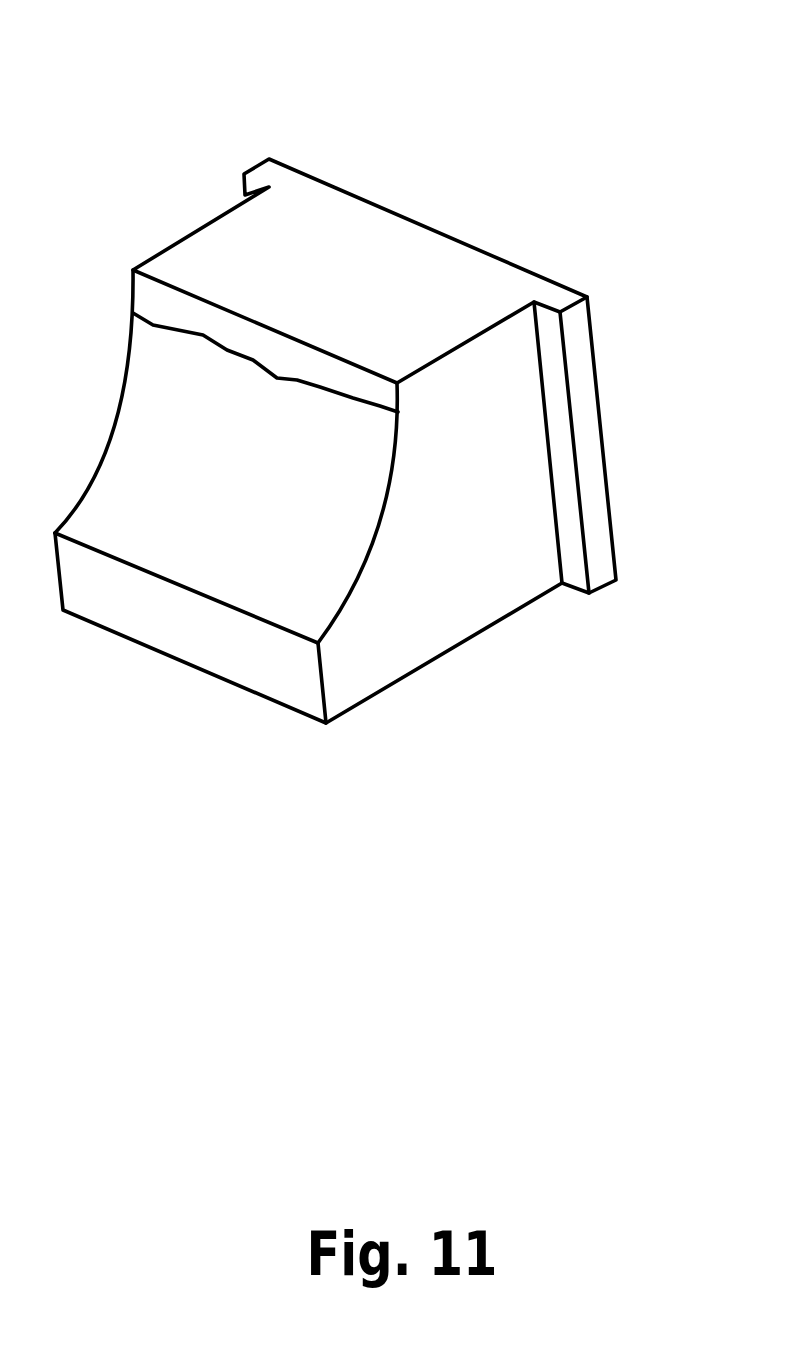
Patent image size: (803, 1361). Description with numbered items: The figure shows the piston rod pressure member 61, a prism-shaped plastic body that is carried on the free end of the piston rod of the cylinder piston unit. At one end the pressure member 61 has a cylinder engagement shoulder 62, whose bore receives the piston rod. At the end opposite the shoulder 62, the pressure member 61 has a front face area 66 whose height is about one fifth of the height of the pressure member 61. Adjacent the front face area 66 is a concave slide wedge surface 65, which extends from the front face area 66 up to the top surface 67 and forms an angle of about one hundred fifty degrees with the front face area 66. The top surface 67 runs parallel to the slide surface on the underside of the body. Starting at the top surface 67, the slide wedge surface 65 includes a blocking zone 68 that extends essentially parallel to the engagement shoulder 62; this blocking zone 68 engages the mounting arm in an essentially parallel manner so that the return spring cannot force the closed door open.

The piston rod pressure member 61 is at (329, 461).
The cylinder engagement shoulder 62 is at (572, 480).
The concave slide wedge surface 65 is at (164, 453).
The front face area 66 is at (198, 627).
The top surface 67 is at (306, 261).
The blocking zone 68 is at (189, 318).